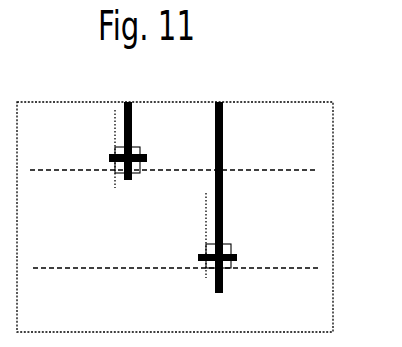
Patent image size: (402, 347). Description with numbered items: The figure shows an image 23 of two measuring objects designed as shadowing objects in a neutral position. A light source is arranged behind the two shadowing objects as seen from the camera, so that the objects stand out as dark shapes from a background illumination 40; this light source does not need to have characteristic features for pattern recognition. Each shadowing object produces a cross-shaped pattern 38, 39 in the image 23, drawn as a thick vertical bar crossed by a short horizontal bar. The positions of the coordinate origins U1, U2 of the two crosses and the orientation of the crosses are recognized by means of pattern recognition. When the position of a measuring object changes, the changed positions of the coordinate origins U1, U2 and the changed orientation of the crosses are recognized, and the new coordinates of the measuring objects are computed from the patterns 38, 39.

The image 23 is at (93, 102).
The pattern 38 is at (124, 135).
The pattern 39 is at (223, 201).
The background illumination 40 is at (312, 293).
The coordinate origin U1 is at (231, 251).
The coordinate origin U2 is at (143, 152).